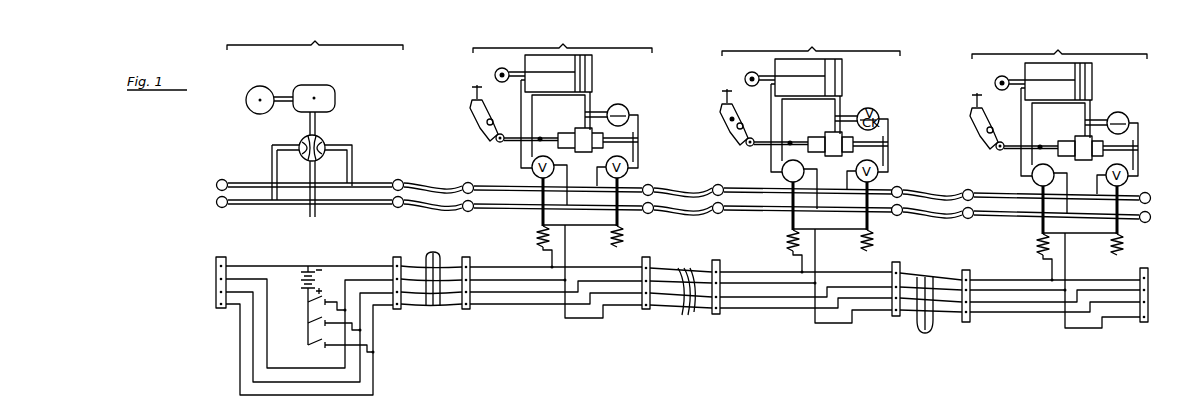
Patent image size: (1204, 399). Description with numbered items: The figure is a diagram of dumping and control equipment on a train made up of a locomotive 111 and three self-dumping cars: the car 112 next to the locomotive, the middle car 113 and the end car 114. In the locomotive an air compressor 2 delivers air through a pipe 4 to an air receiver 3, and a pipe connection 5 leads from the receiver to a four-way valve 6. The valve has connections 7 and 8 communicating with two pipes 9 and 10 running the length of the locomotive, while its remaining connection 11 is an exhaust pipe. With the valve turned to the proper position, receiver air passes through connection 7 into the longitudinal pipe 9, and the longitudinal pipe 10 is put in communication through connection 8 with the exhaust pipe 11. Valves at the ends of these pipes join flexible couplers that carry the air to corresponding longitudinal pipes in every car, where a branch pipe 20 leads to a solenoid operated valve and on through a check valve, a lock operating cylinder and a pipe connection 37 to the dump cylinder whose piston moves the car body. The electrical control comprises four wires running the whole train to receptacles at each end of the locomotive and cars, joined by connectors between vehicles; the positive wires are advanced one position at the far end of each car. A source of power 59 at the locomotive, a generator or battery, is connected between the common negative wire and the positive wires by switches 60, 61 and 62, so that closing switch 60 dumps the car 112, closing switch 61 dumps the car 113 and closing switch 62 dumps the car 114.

The air compressor 2 is at (247, 94).
The air receiver 3 is at (332, 86).
The pipe 4 is at (284, 95).
The pipe connection 5 is at (318, 125).
The four-way valve 6 is at (324, 143).
The connection 7 is at (353, 156).
The connection 8 is at (272, 146).
The longitudinal pipe 9 is at (244, 183).
The longitudinal pipe 10 is at (247, 205).
The exhaust pipe 11 is at (316, 214).
The branch pipe 20 is at (585, 182).
The pipe connection 37 is at (555, 124).
The source of power 59 is at (300, 282).
The switch 60 is at (306, 302).
The switch 61 is at (306, 323).
The switch 62 is at (306, 345).
The locomotive 111 is at (315, 37).
The car 112 is at (562, 39).
The car 113 is at (811, 41).
The car 114 is at (1059, 42).